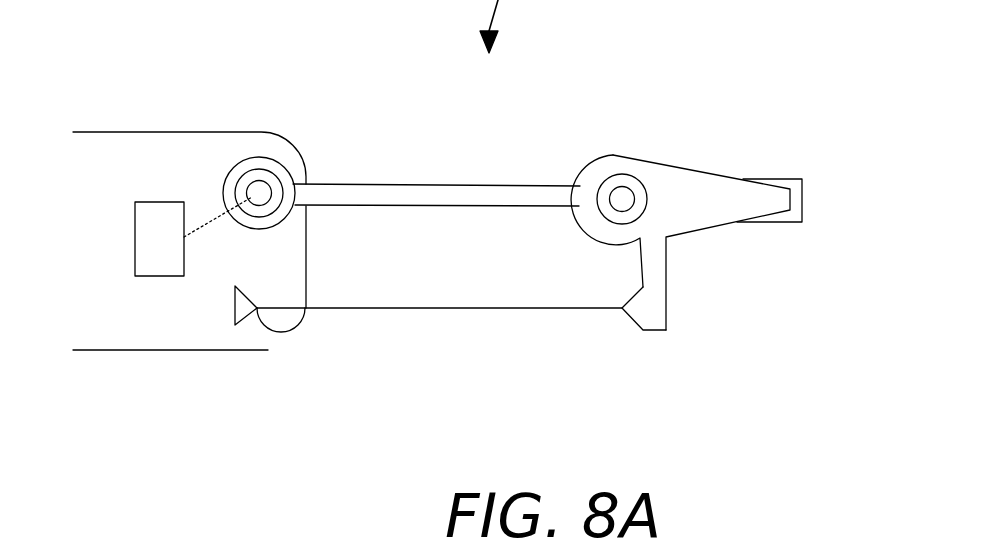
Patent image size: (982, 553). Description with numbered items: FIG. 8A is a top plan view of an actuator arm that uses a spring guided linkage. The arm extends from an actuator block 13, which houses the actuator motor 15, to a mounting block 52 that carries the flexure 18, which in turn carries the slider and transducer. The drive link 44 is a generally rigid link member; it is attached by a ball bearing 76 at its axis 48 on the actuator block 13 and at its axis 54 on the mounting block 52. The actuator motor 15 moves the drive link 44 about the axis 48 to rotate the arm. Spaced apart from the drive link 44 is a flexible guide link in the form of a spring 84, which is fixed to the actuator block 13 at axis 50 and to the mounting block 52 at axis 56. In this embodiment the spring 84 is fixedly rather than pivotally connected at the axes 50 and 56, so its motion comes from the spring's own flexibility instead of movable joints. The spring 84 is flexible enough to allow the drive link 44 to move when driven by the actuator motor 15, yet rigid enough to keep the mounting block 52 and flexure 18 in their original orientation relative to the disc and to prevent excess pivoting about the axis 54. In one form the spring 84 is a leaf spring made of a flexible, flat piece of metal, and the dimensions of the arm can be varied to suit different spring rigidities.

The actuator block 13 is at (157, 172).
The actuator motor 15 is at (150, 245).
The flexure 18 is at (803, 204).
The drive link 44 is at (440, 195).
The axis 48 is at (263, 192).
The axis 50 is at (257, 310).
The mounting block 52 is at (713, 192).
The axis 54 is at (625, 194).
The axis 56 is at (622, 309).
The ball bearing 76 is at (254, 170).
The spring 84 is at (433, 312).